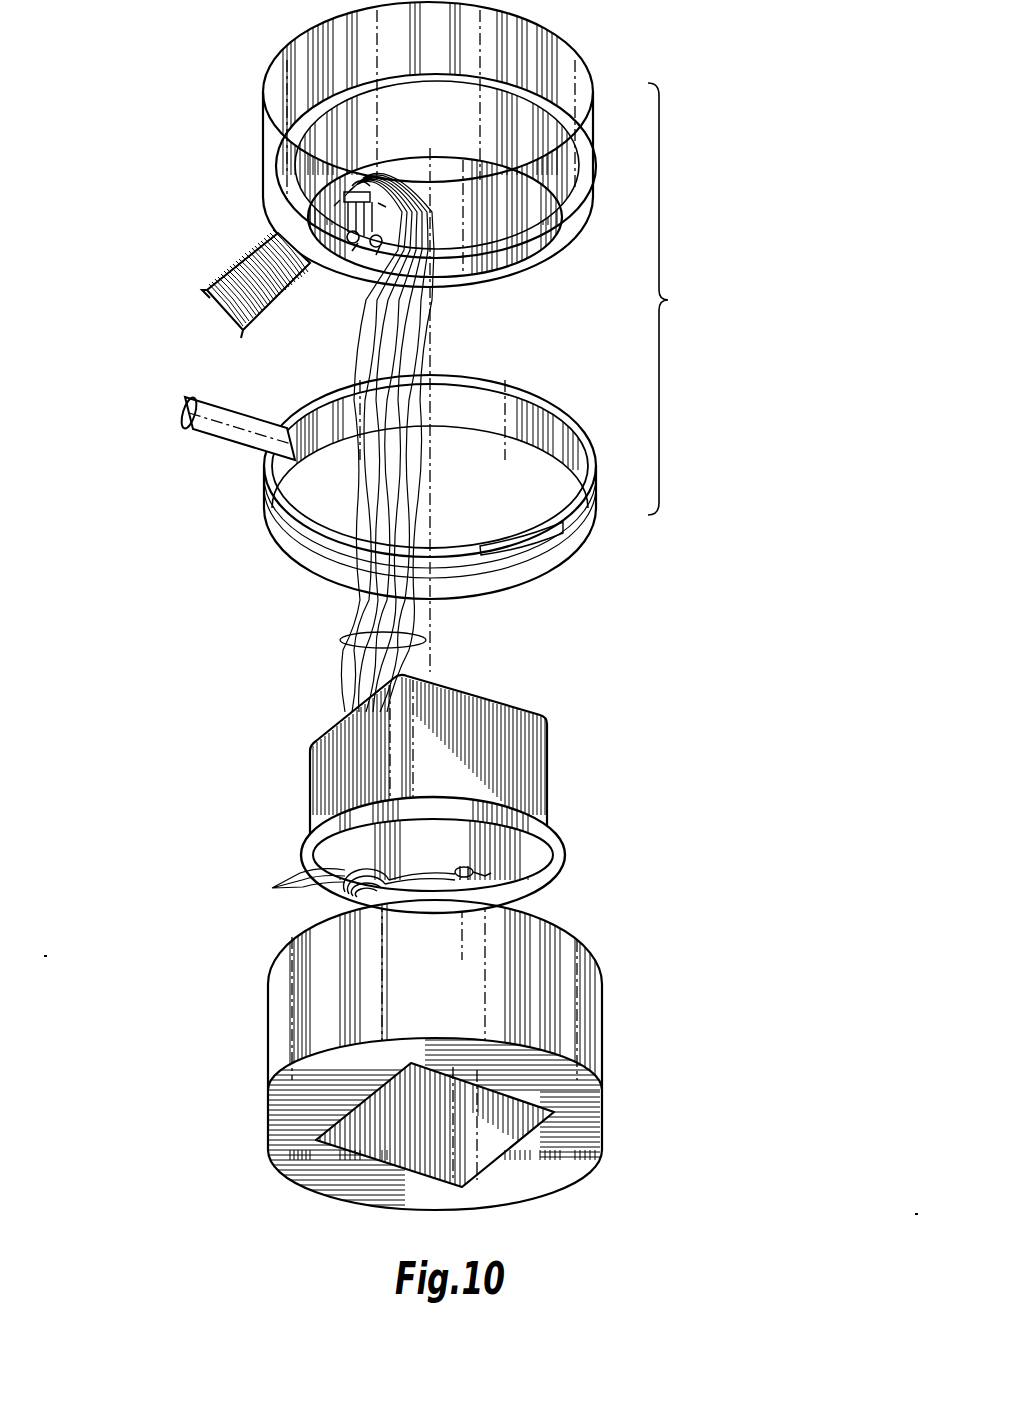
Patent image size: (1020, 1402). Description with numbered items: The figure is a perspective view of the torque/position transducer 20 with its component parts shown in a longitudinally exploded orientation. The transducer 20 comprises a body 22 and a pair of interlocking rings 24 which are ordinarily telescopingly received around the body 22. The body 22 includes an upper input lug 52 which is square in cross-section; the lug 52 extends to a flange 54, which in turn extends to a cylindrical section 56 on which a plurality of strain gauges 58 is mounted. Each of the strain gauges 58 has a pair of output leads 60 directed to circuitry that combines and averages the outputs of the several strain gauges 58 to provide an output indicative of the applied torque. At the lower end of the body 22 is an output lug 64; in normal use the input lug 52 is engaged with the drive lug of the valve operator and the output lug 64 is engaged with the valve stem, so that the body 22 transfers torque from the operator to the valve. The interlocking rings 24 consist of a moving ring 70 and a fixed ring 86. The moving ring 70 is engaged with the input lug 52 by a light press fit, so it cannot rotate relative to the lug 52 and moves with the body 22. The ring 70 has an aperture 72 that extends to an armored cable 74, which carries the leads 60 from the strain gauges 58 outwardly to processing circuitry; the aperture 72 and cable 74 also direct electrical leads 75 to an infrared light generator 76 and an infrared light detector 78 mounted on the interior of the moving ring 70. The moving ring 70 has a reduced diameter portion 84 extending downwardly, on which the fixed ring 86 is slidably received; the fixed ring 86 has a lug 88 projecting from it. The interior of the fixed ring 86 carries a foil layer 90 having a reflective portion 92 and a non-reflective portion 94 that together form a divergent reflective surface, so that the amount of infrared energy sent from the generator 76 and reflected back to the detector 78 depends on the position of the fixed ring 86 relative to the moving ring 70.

The torque/position transducer 20 is at (280, 810).
The body 22 is at (552, 790).
The interlocking rings 24 is at (675, 299).
The upper input lug 52 is at (533, 738).
The flange 54 is at (558, 847).
The cylindrical section 56 is at (528, 873).
The strain gauges 58 is at (367, 902).
The output leads 60 is at (340, 648).
The output lug 64 is at (590, 1010).
The moving ring 70 is at (583, 100).
The aperture 72 is at (305, 170).
The armored cable 74 is at (237, 273).
The electrical leads 75 is at (358, 207).
The infrared light generator 76 is at (357, 234).
The infrared light detector 78 is at (370, 275).
The reduced diameter portion 84 is at (570, 168).
The fixed ring 86 is at (550, 413).
The lug 88 is at (217, 440).
The foil layer 90 is at (550, 562).
The reflective portion 92 is at (496, 560).
The non-reflective portion 94 is at (478, 547).